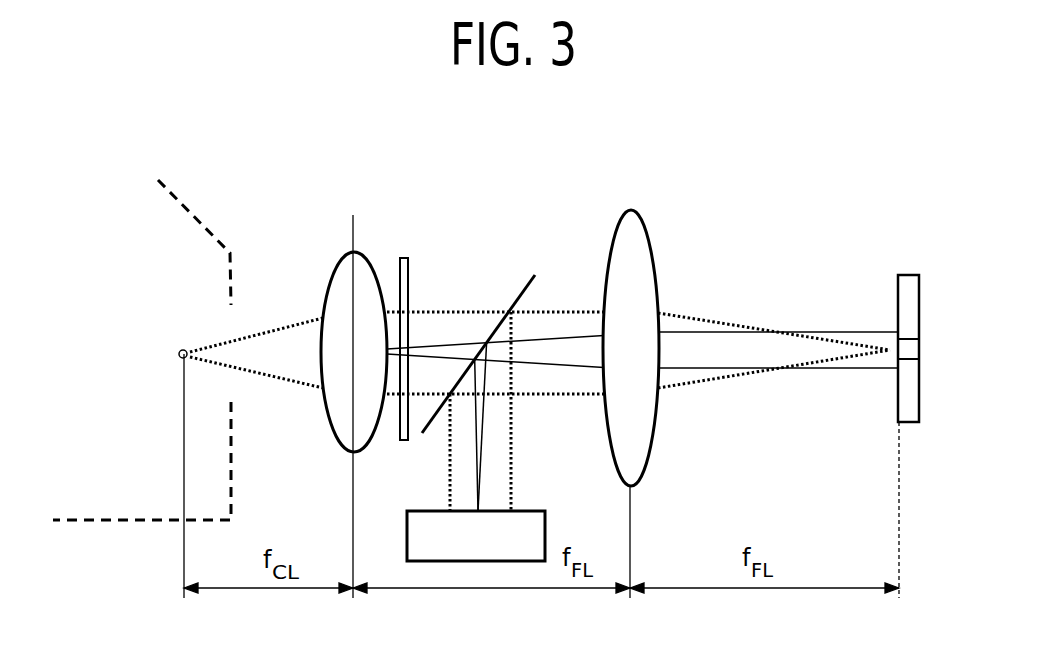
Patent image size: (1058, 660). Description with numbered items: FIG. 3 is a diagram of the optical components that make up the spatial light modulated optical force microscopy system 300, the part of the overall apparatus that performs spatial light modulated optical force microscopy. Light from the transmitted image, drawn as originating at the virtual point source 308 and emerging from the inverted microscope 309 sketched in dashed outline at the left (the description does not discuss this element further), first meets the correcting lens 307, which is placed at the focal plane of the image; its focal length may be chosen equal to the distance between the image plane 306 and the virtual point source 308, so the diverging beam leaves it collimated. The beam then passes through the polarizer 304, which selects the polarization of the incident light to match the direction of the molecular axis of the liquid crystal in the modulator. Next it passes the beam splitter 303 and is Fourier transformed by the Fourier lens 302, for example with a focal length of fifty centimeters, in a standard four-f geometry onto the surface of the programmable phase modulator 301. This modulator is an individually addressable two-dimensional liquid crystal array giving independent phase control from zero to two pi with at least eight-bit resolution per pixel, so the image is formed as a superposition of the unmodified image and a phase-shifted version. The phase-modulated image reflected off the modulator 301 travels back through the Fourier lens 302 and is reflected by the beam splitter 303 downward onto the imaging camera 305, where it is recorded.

The spatial light modulated optical force microscopy apparatus (SMOFM) 300 is at (728, 160).
The programmable phase modulator (PPM) 301 is at (909, 313).
The Fourier lens (FL) 302 is at (631, 369).
The beam splitter (BS) 303 is at (527, 280).
The polarizer (P) 304 is at (407, 313).
The CCD camera 305 is at (473, 562).
The image plane (IP) 306 is at (357, 372).
The correcting lens (CL) 307 is at (340, 272).
The virtual point source (VPS) 308 is at (154, 373).
The inverted microscope 309 is at (151, 329).